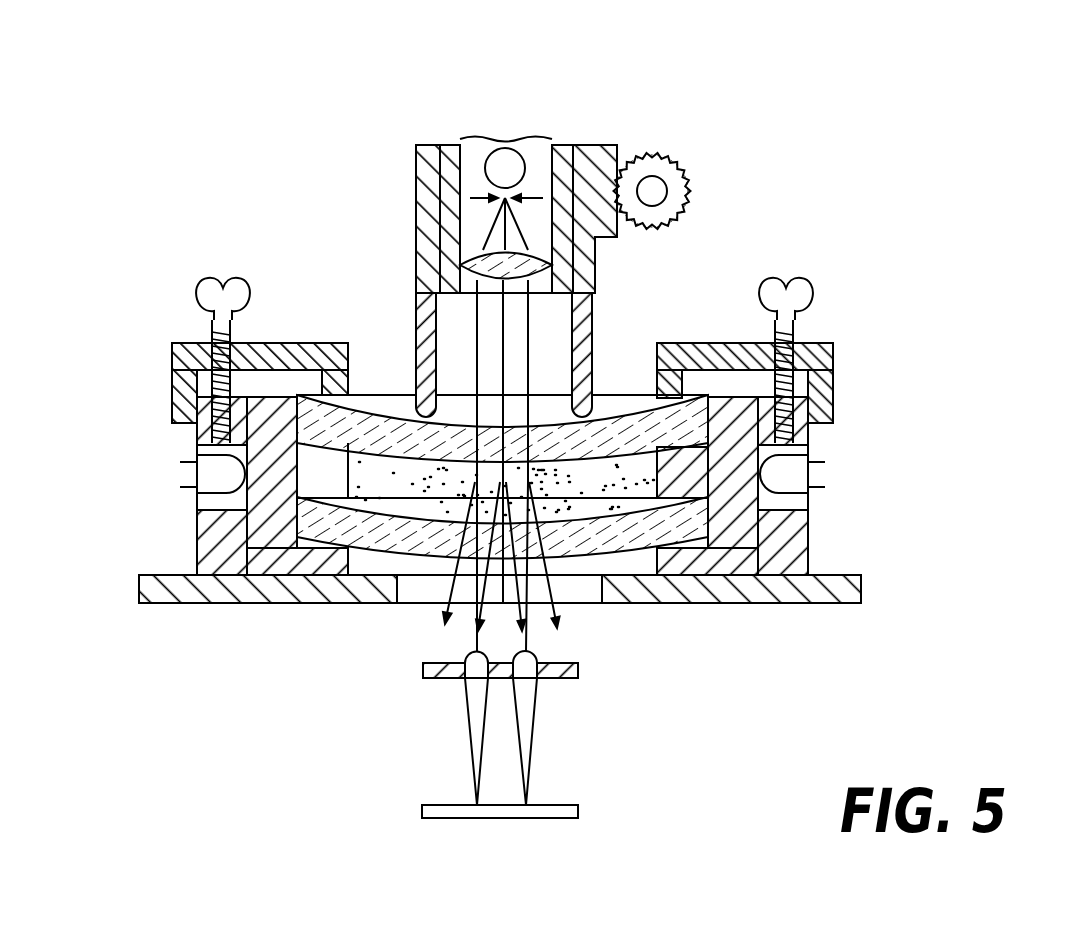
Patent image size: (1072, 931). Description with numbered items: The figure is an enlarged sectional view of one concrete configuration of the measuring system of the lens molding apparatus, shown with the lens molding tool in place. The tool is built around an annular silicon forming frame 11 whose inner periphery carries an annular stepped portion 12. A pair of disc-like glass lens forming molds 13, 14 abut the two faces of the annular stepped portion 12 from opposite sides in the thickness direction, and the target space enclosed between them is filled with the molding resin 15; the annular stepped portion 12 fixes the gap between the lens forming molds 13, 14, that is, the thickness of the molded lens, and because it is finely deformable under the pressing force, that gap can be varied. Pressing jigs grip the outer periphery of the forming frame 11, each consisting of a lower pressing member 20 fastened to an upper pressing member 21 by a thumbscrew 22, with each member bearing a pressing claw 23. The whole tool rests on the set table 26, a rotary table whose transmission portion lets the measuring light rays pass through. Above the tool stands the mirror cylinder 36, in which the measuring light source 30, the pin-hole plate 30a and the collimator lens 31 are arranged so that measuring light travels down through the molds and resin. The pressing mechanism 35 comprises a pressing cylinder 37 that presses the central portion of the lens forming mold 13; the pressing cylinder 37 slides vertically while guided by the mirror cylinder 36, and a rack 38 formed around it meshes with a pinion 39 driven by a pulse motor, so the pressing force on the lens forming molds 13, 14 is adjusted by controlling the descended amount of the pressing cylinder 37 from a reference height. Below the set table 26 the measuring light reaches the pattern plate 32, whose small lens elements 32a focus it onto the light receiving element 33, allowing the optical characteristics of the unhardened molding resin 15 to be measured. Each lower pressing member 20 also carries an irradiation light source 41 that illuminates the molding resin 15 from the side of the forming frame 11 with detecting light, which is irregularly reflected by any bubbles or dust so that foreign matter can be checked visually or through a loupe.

The forming frame 11 is at (273, 527).
The annular stepped portion 12 is at (313, 578).
The lens forming mold 13 is at (612, 410).
The lens forming mold 14 is at (383, 538).
The molding resin 15 is at (625, 492).
The lower pressing member 20 is at (247, 570).
The upper pressing member 21 is at (178, 372).
The thumbscrew 22 is at (212, 290).
The pressing claw 23 is at (323, 378).
The set table 26 is at (818, 606).
The light source 30 is at (510, 160).
The pin-hole plate 30a is at (470, 198).
The collimator lens 31 is at (465, 268).
The pattern plate 32 is at (568, 680).
The microlens 32a is at (468, 655).
The light receiving element 33 is at (503, 818).
The pressing mechanism 35 is at (702, 169).
The mirror cylinder 36 is at (603, 148).
The pressing cylinder 37 is at (419, 150).
The rack 38 is at (605, 237).
The pinion 39 is at (676, 158).
The irradiation light source 41 is at (217, 482).